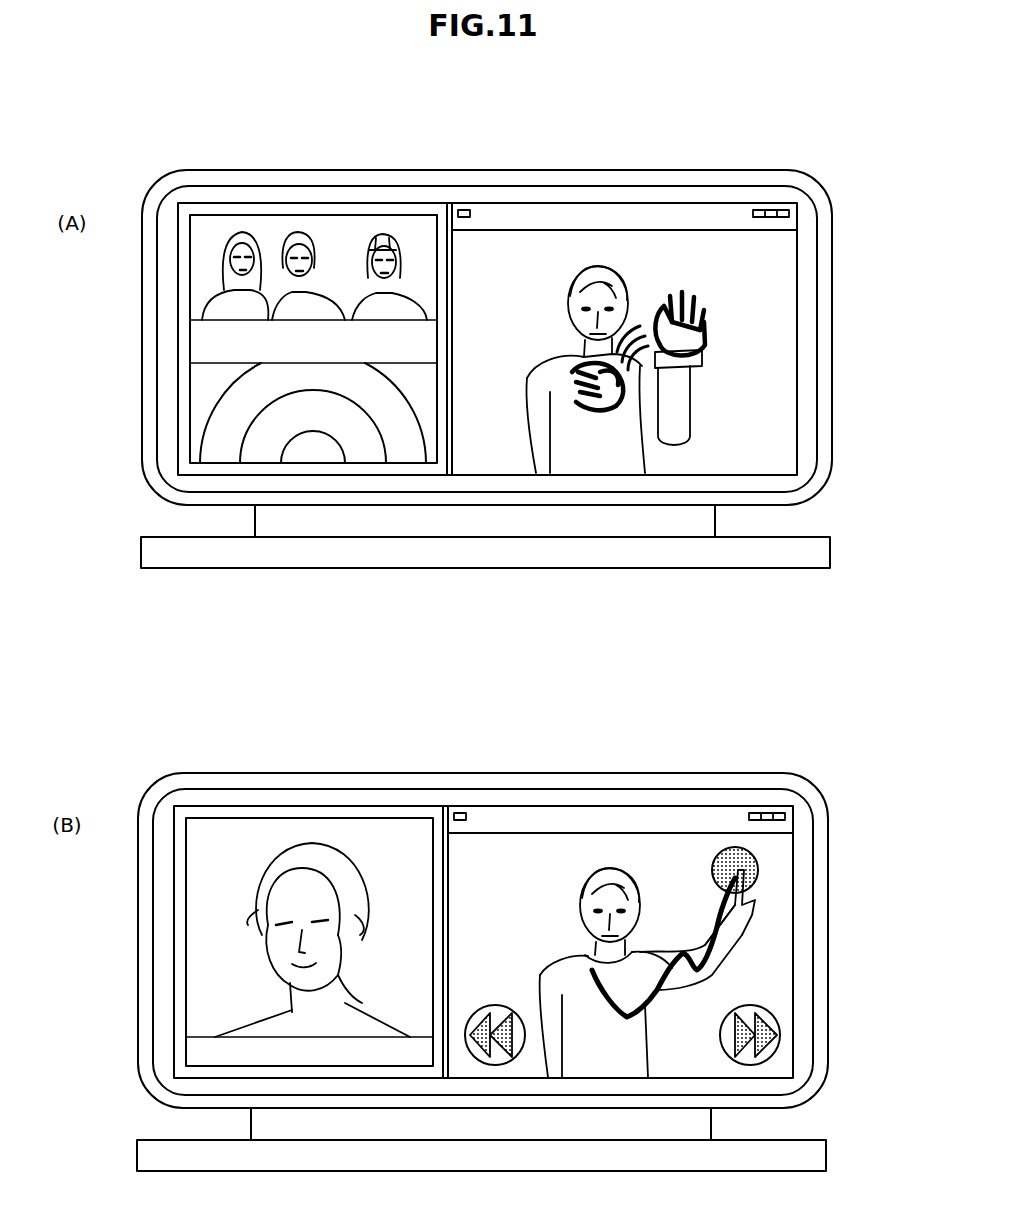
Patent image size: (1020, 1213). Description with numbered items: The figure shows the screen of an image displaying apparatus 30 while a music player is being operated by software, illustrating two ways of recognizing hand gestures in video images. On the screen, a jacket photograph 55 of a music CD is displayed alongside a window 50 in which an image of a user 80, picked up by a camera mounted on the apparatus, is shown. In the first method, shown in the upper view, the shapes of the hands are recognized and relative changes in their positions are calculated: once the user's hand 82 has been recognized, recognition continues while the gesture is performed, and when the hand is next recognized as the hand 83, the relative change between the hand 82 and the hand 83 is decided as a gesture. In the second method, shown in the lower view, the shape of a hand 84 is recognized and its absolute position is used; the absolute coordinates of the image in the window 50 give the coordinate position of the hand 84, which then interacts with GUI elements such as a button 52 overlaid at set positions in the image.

The image displaying apparatus 30 is at (478, 170).
The jacket photograph 55 is at (301, 210).
The window 50 is at (676, 205).
The user 80 is at (599, 268).
The hand 82 is at (708, 312).
The hand 83 is at (700, 355).
The hand 84 is at (755, 912).
The button 52 is at (778, 1030).